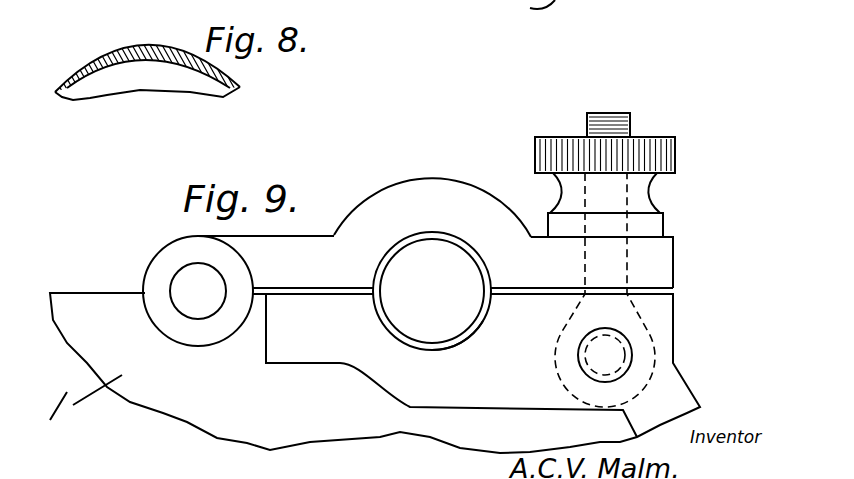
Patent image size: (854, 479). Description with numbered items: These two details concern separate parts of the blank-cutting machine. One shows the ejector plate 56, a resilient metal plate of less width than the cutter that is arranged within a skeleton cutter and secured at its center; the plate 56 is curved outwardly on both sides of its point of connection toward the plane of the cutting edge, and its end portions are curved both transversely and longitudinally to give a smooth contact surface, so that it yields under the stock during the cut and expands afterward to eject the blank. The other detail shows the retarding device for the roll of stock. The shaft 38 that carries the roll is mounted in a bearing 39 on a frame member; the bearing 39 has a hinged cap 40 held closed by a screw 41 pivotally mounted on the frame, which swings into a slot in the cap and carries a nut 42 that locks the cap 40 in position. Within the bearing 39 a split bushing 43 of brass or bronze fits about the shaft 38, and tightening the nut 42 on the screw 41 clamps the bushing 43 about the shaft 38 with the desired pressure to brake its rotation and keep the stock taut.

In FIG. 8, the ejector plate 56 is at (157, 45).
In FIG. 9, the shaft 38 is at (435, 268).
In FIG. 9, the bearing 39 is at (407, 347).
In FIG. 9, the hinged cap 40 is at (303, 255).
In FIG. 9, the screw 41 is at (625, 113).
In FIG. 9, the nut 42 is at (650, 152).
In FIG. 9, the split bushing 43 is at (455, 348).